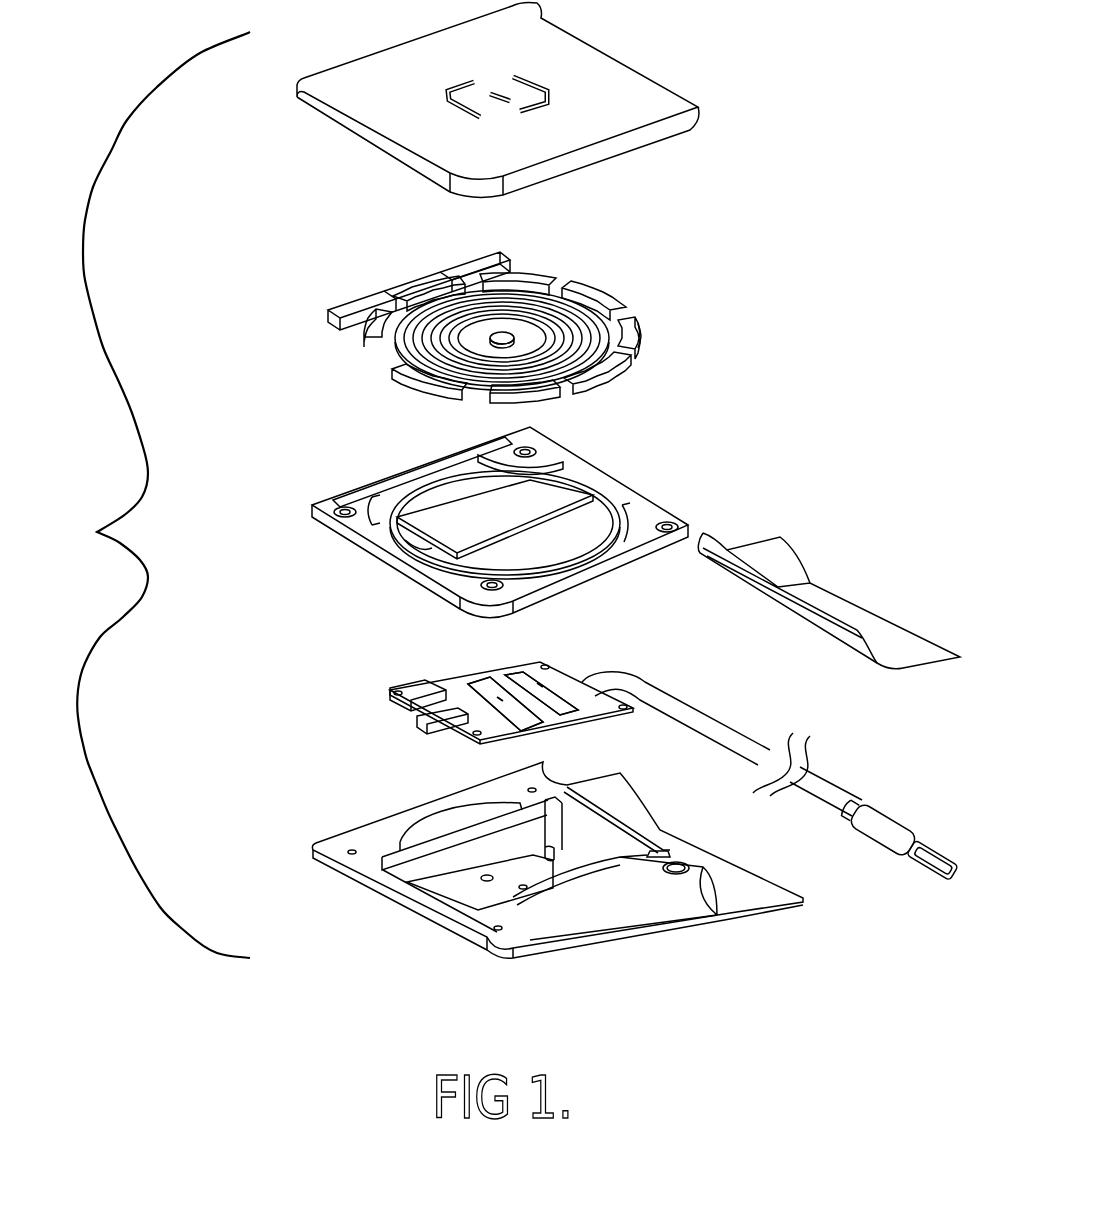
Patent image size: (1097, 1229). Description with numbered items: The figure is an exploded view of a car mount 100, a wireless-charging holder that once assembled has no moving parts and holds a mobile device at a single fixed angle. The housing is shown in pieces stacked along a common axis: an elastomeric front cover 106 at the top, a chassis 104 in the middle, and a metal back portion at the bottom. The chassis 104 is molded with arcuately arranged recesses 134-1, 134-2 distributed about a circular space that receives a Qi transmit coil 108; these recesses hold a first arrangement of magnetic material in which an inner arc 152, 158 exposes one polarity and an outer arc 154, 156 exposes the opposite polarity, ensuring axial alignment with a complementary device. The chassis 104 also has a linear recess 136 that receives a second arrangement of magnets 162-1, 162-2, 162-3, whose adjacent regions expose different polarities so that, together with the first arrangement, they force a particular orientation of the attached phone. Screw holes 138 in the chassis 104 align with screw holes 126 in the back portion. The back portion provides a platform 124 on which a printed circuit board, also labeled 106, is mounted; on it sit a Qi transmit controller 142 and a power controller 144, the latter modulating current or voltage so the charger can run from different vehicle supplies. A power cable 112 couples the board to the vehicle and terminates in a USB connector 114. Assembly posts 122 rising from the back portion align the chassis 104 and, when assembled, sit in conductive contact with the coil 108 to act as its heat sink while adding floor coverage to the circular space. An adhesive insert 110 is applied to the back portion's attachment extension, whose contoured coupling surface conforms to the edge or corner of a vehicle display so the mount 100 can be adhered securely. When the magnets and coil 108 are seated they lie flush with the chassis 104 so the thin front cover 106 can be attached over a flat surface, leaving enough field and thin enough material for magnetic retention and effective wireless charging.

The car mount 100 is at (145, 495).
The chassis 104 is at (328, 530).
The front cover 106 is at (598, 52).
The Qi transmit coil 108 is at (577, 302).
The adhesive insert 110 is at (840, 605).
The power cable 112 is at (712, 722).
The USB connector 114 is at (907, 820).
The assembly posts 122 is at (440, 825).
The platform 124 is at (440, 885).
The screw holes 126 is at (350, 848).
The recess 134-1 is at (600, 548).
The recess 134-2 is at (565, 460).
The linear recess 136 is at (410, 477).
The screw holes 138 is at (532, 448).
The Qi transmit controller 142 is at (477, 682).
The power controller 144 is at (515, 673).
The inner arc of magnetic material 152 is at (622, 318).
The outer arc of magnetic material 154 is at (642, 325).
The outer arc of magnetic material 156 is at (538, 270).
The inner arc of magnetic material 158 is at (560, 285).
The magnet 162-1 is at (358, 304).
The magnet 162-2 is at (412, 284).
The magnet 162-3 is at (476, 262).